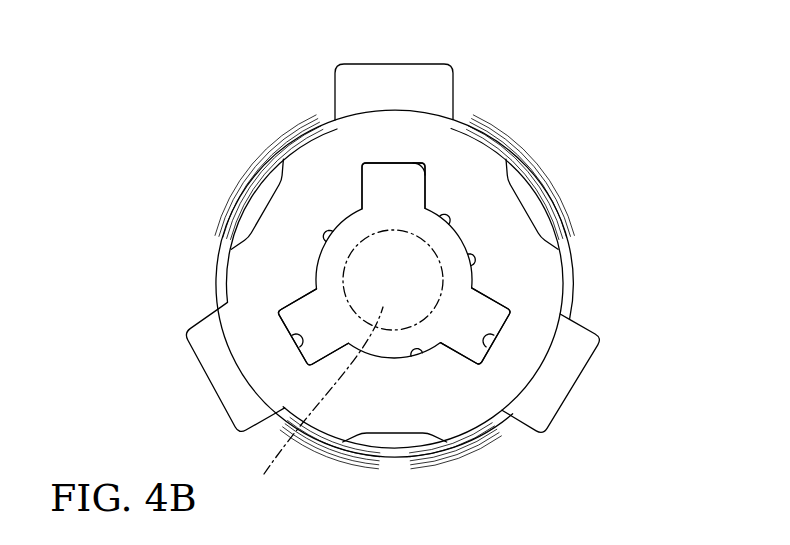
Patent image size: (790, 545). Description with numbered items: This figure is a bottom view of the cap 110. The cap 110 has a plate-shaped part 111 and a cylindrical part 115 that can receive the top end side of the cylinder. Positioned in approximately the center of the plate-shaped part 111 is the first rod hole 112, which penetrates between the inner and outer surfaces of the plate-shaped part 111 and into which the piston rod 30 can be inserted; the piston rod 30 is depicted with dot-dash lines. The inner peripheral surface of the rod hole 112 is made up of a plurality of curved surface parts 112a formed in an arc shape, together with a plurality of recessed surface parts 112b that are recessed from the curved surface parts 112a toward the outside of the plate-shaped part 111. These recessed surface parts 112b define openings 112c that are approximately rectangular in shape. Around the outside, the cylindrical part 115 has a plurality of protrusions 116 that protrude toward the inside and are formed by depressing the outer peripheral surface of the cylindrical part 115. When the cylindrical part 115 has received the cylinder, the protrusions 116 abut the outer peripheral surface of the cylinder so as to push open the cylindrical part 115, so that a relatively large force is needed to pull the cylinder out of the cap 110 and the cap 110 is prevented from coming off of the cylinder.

The cap 110 is at (213, 284).
The plate-shaped part 111 is at (260, 280).
The first rod hole 112 is at (443, 222).
The curved surface parts 112a is at (337, 232).
The recessed surface parts 112b is at (430, 176).
The openings 112c is at (393, 185).
The cylindrical part 115 is at (222, 243).
The protrusions 116 is at (256, 192).
The piston rod 30 is at (345, 365).